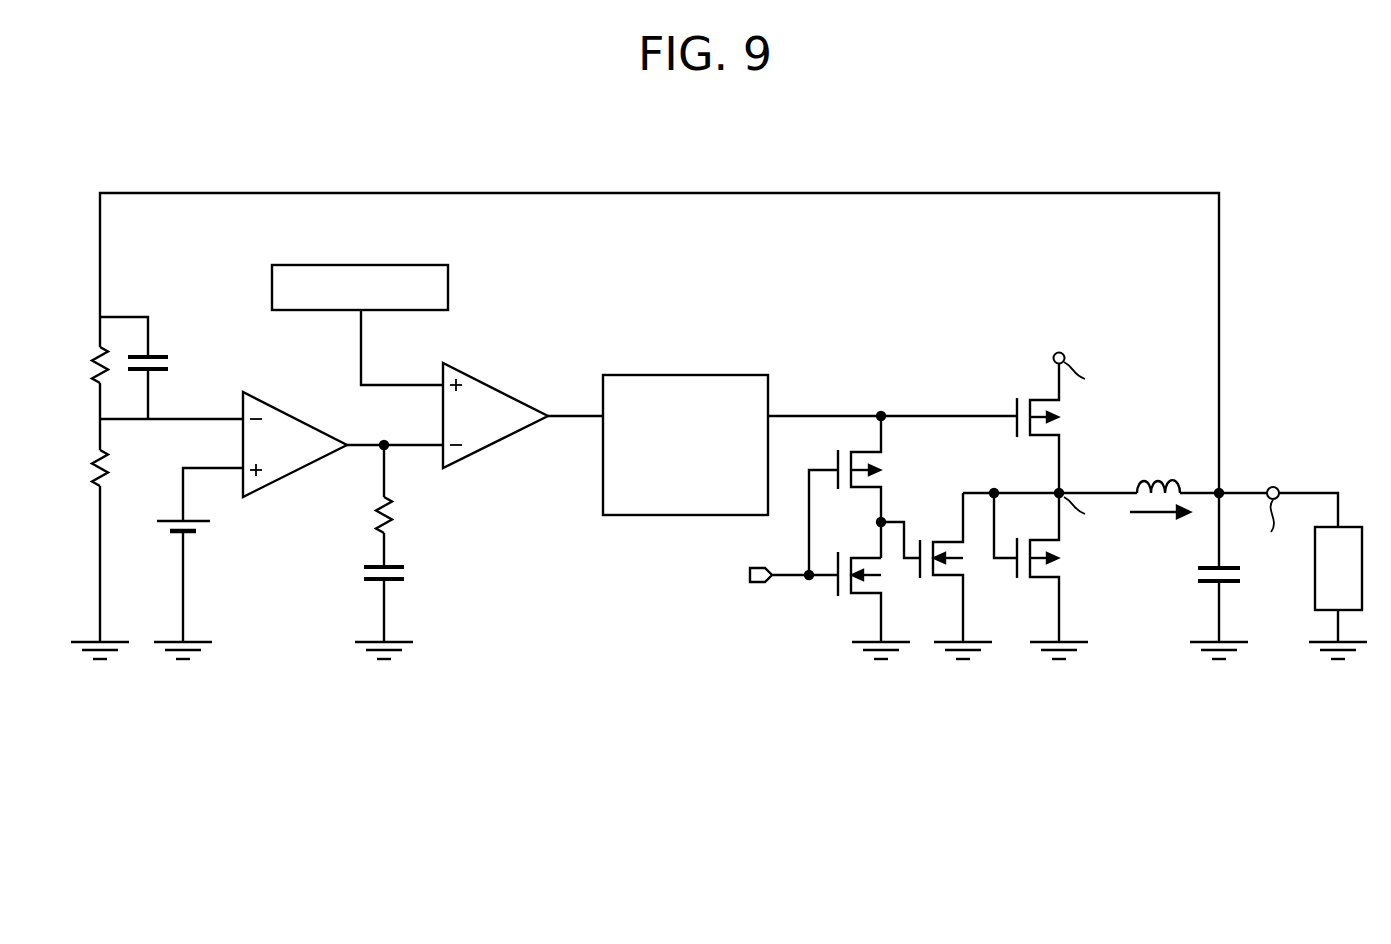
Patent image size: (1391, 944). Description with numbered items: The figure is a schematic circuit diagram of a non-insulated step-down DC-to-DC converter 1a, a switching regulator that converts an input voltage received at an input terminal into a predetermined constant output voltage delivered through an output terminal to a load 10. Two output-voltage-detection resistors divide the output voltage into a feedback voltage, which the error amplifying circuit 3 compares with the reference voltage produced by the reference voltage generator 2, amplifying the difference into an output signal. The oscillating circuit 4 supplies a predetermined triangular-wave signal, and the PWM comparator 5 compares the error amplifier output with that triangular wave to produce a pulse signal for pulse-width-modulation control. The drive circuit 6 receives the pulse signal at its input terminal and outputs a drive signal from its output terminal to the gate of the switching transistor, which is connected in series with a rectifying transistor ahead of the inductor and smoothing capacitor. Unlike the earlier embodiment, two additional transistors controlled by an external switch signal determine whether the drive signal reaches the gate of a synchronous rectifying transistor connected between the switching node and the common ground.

The step-down DC-to-DC converter 1a is at (1003, 167).
The reference voltage generator 2 is at (163, 529).
The error amplifying circuit 3 is at (289, 417).
The oscillating circuit 4 is at (435, 265).
The PWM comparator 5 is at (490, 385).
The drive circuit 6 is at (756, 375).
The load 10 is at (1346, 527).